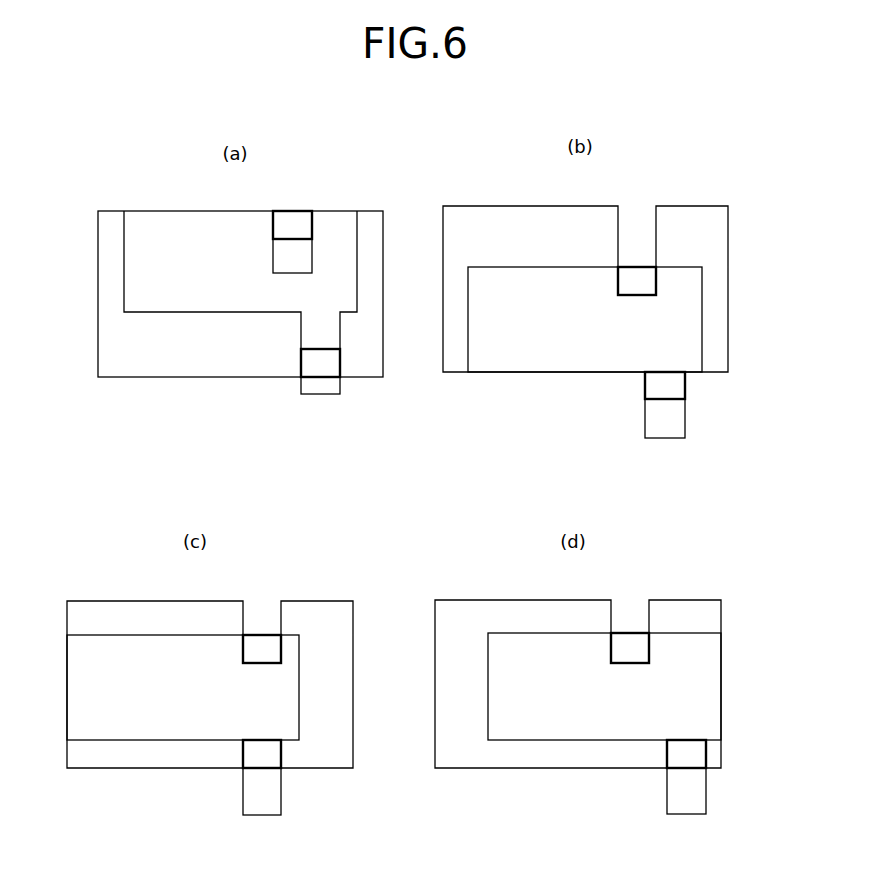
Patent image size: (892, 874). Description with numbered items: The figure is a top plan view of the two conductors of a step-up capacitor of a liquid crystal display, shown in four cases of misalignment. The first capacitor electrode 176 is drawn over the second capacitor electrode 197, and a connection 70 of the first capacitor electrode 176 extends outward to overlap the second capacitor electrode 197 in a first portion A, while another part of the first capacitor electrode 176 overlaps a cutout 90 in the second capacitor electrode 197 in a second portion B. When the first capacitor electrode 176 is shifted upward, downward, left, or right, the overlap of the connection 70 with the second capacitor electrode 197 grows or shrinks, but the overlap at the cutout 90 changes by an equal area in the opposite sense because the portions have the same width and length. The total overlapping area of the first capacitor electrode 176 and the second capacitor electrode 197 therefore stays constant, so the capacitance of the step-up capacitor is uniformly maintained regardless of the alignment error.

The second capacitor electrode 197 is at (98, 259).
The first capacitor electrode 176 is at (180, 313).
The cutout 90 is at (311, 266).
The connection 70 is at (340, 329).